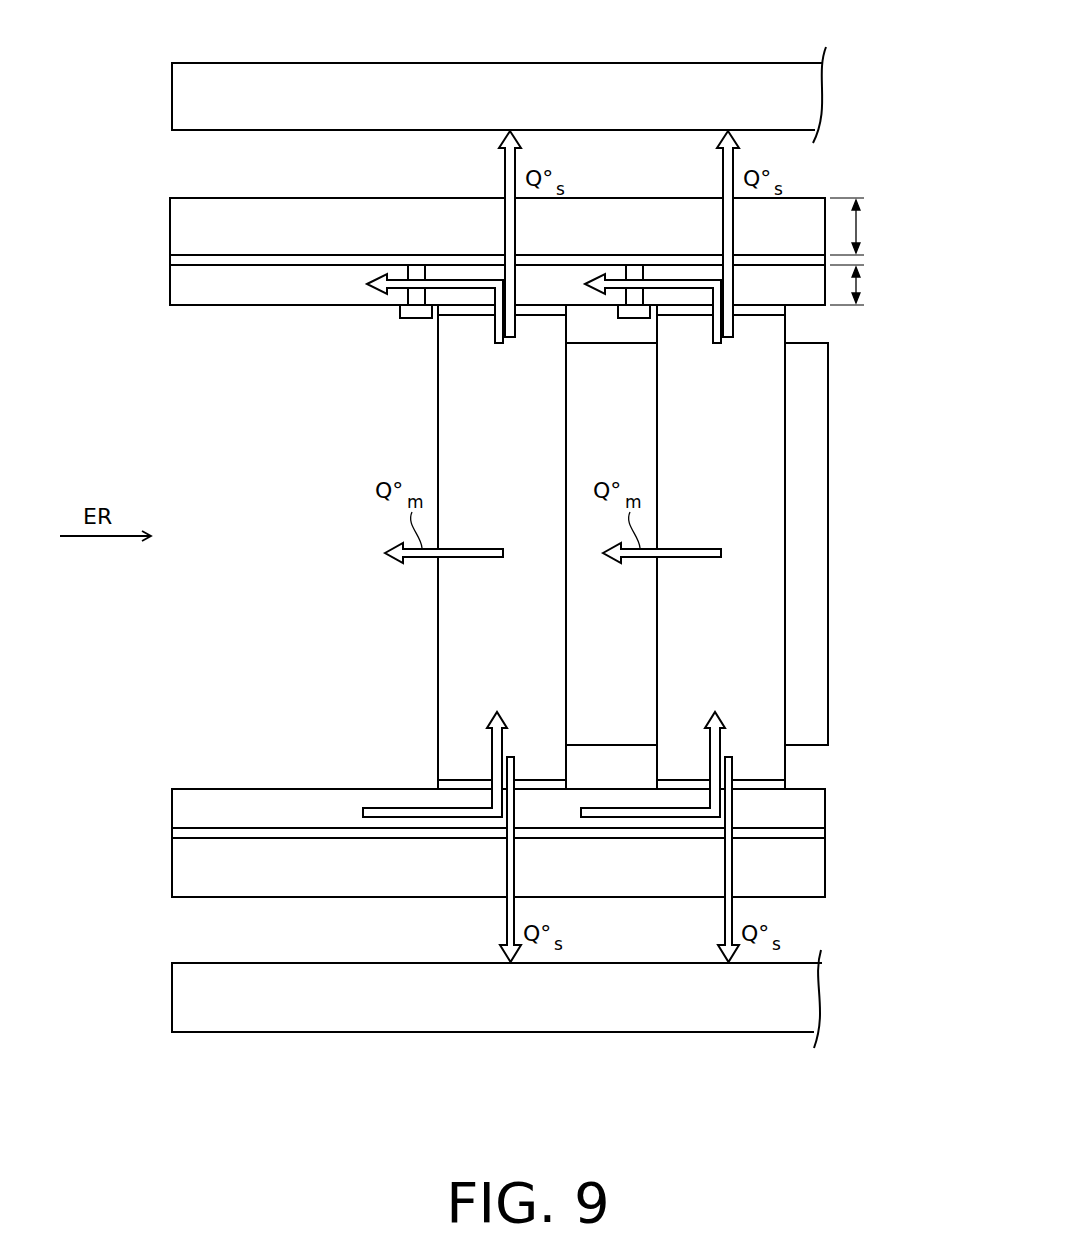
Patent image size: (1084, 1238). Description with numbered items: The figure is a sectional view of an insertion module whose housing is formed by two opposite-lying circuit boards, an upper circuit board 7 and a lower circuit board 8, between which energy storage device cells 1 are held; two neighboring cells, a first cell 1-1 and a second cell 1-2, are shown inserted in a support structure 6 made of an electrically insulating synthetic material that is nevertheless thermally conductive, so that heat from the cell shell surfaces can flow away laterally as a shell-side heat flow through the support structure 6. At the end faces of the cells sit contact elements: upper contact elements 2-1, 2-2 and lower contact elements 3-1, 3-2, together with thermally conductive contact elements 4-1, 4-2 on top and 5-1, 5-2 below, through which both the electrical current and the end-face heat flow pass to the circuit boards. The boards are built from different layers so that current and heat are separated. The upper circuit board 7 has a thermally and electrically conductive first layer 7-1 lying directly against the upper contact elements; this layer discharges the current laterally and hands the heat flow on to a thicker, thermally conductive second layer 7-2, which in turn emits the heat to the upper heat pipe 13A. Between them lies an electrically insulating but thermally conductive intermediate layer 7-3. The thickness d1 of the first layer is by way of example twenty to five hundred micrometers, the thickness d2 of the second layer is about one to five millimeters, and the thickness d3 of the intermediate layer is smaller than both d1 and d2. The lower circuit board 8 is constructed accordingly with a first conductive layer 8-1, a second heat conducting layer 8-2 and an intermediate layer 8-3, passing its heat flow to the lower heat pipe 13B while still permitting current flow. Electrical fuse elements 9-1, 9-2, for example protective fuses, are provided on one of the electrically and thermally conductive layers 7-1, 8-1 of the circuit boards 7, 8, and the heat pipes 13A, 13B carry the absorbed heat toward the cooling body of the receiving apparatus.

The energy storage device cell 1 is at (396, 290).
The first energy storage device cell 1-1 is at (464, 547).
The second energy storage device cell 1-2 is at (795, 547).
The upper contact element of first cell 2-1 is at (478, 317).
The upper contact element of second cell 2-2 is at (696, 317).
The lower contact element of first cell 3-1 is at (452, 779).
The lower contact element of second cell 3-2 is at (670, 779).
The thermally conductive upper contact element of first cell 4-1 is at (545, 317).
The thermally conductive upper contact element of second cell 4-2 is at (763, 317).
The thermally conductive lower contact element of first cell 5-1 is at (541, 779).
The thermally conductive lower contact element of second cell 5-2 is at (759, 779).
The support structure 6 is at (620, 618).
The upper circuit board 7 is at (474, 254).
The first electrically and thermally conductive layer 7-1 is at (248, 292).
The second thermally conductive layer 7-2 is at (288, 216).
The electrically insulating intermediate layer 7-3 is at (206, 262).
The lower circuit board 8 is at (522, 849).
The first electrically and thermally conductive layer of lower circuit board 8-1 is at (253, 806).
The second thermally conductive layer of lower circuit board 8-2 is at (280, 882).
The intermediate layer of lower circuit board 8-3 is at (195, 835).
The electrical fuse element 9-1 is at (421, 319).
The electrical fuse element 9-2 is at (639, 319).
The upper heat pipe 13A is at (668, 88).
The lower heat pipe 13B is at (762, 1010).
The thickness of first layer d1 is at (858, 291).
The thickness of second layer d2 is at (858, 226).
The thickness of intermediate layer d3 is at (853, 261).